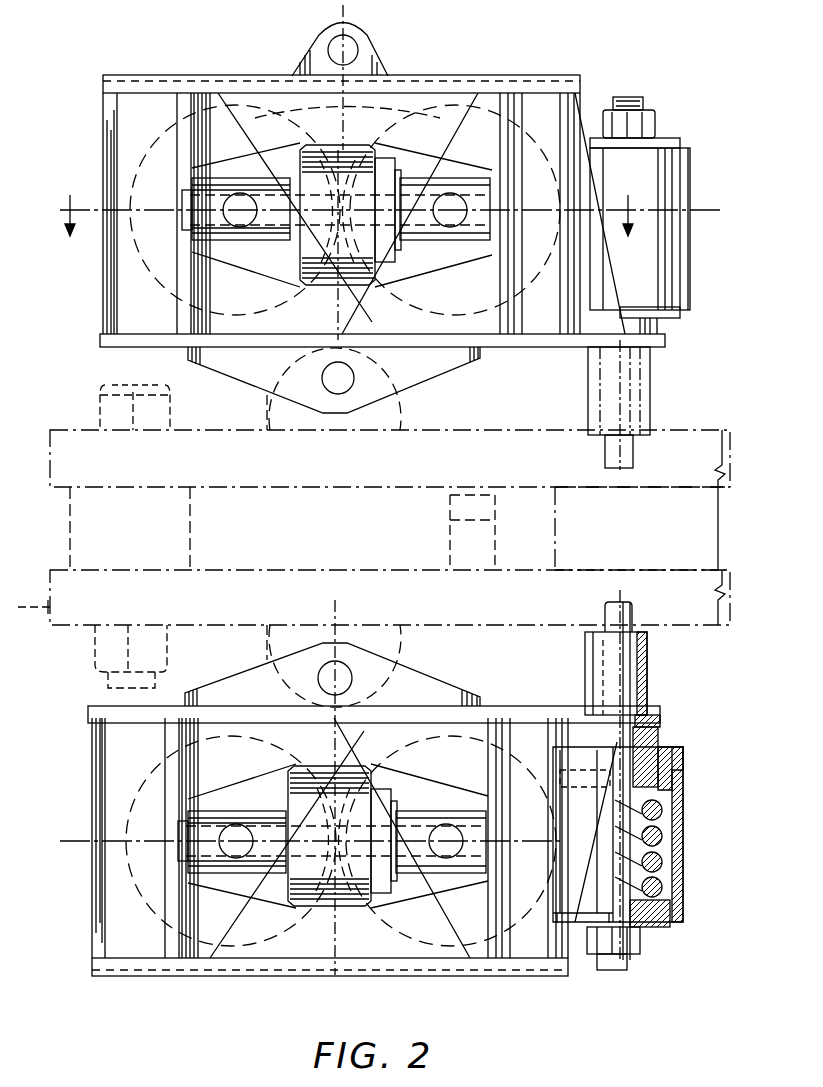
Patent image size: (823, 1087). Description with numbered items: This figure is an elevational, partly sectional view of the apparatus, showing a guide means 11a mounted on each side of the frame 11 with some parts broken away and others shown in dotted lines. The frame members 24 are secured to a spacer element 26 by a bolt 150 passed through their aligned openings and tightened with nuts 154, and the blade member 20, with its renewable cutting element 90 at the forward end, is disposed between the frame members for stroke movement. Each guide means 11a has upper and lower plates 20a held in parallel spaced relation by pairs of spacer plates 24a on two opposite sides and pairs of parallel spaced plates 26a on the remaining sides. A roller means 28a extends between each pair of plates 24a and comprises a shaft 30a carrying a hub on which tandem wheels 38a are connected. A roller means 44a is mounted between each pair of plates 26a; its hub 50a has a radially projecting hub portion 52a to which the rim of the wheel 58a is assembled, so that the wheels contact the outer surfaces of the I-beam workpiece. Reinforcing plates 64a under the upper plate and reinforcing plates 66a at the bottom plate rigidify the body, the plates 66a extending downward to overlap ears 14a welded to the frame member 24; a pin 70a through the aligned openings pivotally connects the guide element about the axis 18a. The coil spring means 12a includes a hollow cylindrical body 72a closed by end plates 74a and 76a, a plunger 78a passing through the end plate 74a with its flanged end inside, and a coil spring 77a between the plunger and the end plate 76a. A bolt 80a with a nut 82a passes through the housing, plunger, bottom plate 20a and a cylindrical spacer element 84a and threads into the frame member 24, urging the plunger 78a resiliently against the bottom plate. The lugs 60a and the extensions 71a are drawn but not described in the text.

The upper and lower plates 20a is at (508, 75).
The spacer plates 24a is at (327, 525).
The parallel spaced plates 26a is at (184, 95).
The guide means 11a is at (542, 84).
The reinforcing plates 64a is at (389, 98).
The mounting lug 60a is at (322, 58).
The diagonal member 71a is at (582, 142).
The hub 50a is at (282, 190).
The wheel 58a is at (272, 880).
The radially projecting hub portion 52a is at (396, 178).
The shaft 30a is at (222, 205).
The roller means 44a is at (375, 278).
The roller means 28a is at (140, 262).
The wheels 38a is at (400, 122).
The reinforcing plates 66a is at (458, 365).
The pin 70a is at (349, 390).
The common axis 18a is at (300, 372).
The ears 14a is at (278, 405).
The frame member 24 is at (390, 527).
The spacer element 26 is at (130, 528).
The renewable cutting element 90 is at (472, 532).
The blade member 20 is at (640, 528).
The bolt 150 is at (125, 380).
The nuts 154 is at (112, 420).
The frame 11 is at (323, 407).
The bolt 80a is at (626, 97).
The nut 82a is at (640, 120).
The end plate 76a is at (665, 140).
The hollow cylindrical body 72a is at (670, 194).
The coil spring means 12a is at (653, 284).
The end plate 74a is at (675, 318).
The plunger 78a is at (660, 335).
The cylindrical spacer element 84a is at (638, 389).
The coil spring 77a is at (662, 860).